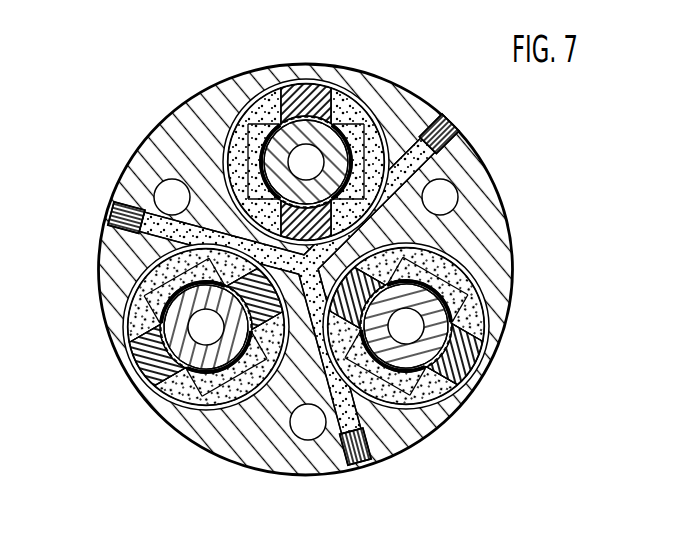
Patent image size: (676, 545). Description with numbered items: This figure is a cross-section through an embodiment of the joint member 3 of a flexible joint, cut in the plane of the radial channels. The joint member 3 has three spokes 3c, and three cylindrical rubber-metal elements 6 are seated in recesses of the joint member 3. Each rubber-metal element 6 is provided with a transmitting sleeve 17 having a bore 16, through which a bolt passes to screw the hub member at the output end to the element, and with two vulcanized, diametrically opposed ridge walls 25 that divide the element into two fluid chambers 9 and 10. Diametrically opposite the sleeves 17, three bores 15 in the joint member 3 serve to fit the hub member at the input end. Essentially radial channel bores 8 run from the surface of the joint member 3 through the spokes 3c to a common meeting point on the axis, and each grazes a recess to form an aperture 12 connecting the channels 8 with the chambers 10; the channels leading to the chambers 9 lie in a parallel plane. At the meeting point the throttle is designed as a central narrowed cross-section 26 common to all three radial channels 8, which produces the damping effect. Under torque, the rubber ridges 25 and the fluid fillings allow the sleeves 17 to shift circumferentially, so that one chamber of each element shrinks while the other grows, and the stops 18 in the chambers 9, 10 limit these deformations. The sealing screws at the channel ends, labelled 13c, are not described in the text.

The joint member 3 is at (287, 271).
The spokes 3c is at (227, 103).
The rubber-metal element 6 is at (433, 113).
The channel bore 8 is at (157, 222).
The fluid chamber 9 is at (228, 120).
The fluid chamber 10 is at (407, 107).
The aperture 12 is at (318, 310).
The fastening pin 13c is at (110, 212).
The bore 15 is at (313, 432).
The bore 16 is at (207, 323).
The transmitting sleeve 17 is at (477, 320).
The stop 18 is at (460, 270).
The ridge wall 25 is at (480, 368).
The narrowed cross-section 26 is at (303, 313).